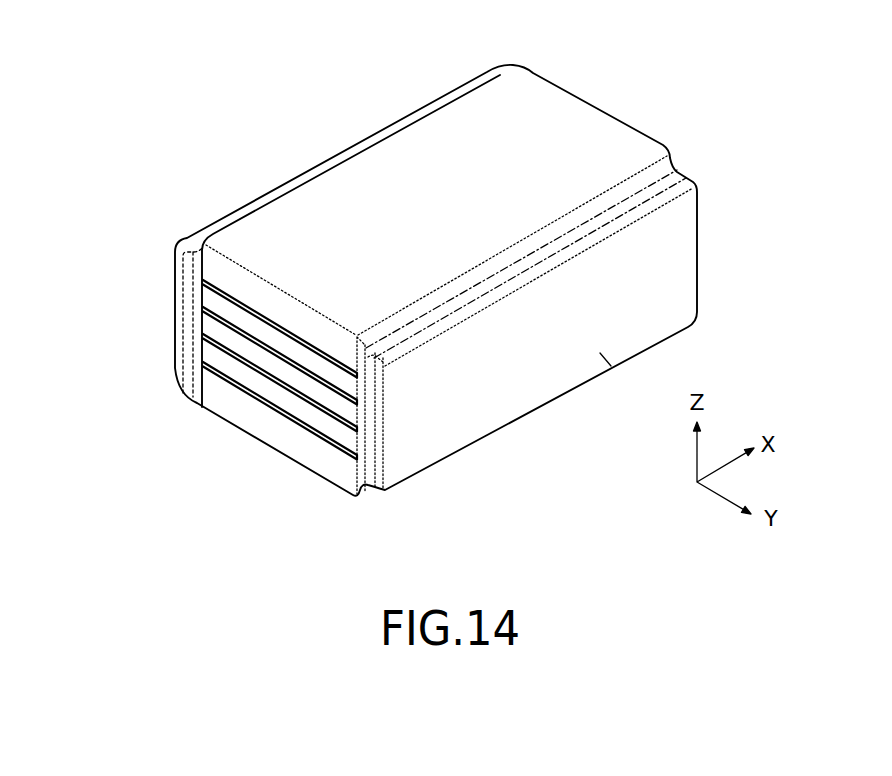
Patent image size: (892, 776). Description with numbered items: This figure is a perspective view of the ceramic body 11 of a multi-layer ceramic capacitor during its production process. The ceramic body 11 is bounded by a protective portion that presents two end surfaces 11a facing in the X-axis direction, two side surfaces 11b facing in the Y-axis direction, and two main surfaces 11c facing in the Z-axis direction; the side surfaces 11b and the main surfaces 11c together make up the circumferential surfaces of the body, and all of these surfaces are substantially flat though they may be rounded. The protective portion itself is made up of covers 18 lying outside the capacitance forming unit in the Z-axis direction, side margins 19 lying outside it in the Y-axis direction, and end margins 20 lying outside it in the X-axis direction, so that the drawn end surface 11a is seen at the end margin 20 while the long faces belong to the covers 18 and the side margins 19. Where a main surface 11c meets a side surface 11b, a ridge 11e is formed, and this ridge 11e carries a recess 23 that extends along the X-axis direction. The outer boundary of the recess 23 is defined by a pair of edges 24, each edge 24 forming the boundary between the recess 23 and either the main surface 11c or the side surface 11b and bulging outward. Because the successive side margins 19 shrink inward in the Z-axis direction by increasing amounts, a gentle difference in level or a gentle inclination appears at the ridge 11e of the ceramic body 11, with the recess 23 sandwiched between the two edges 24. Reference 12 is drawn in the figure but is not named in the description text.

The ceramic body 11 is at (601, 66).
The end surface 11a is at (317, 464).
The side surface 11b is at (605, 362).
The main surface 11c is at (382, 177).
The ridge 11e is at (242, 124).
The electrode terminal 12 is at (225, 370).
The cover 18 is at (296, 319).
The side margin 19 is at (167, 264).
The end margin 20 is at (259, 381).
The recess 23 is at (224, 212).
The edge 24 is at (188, 240).